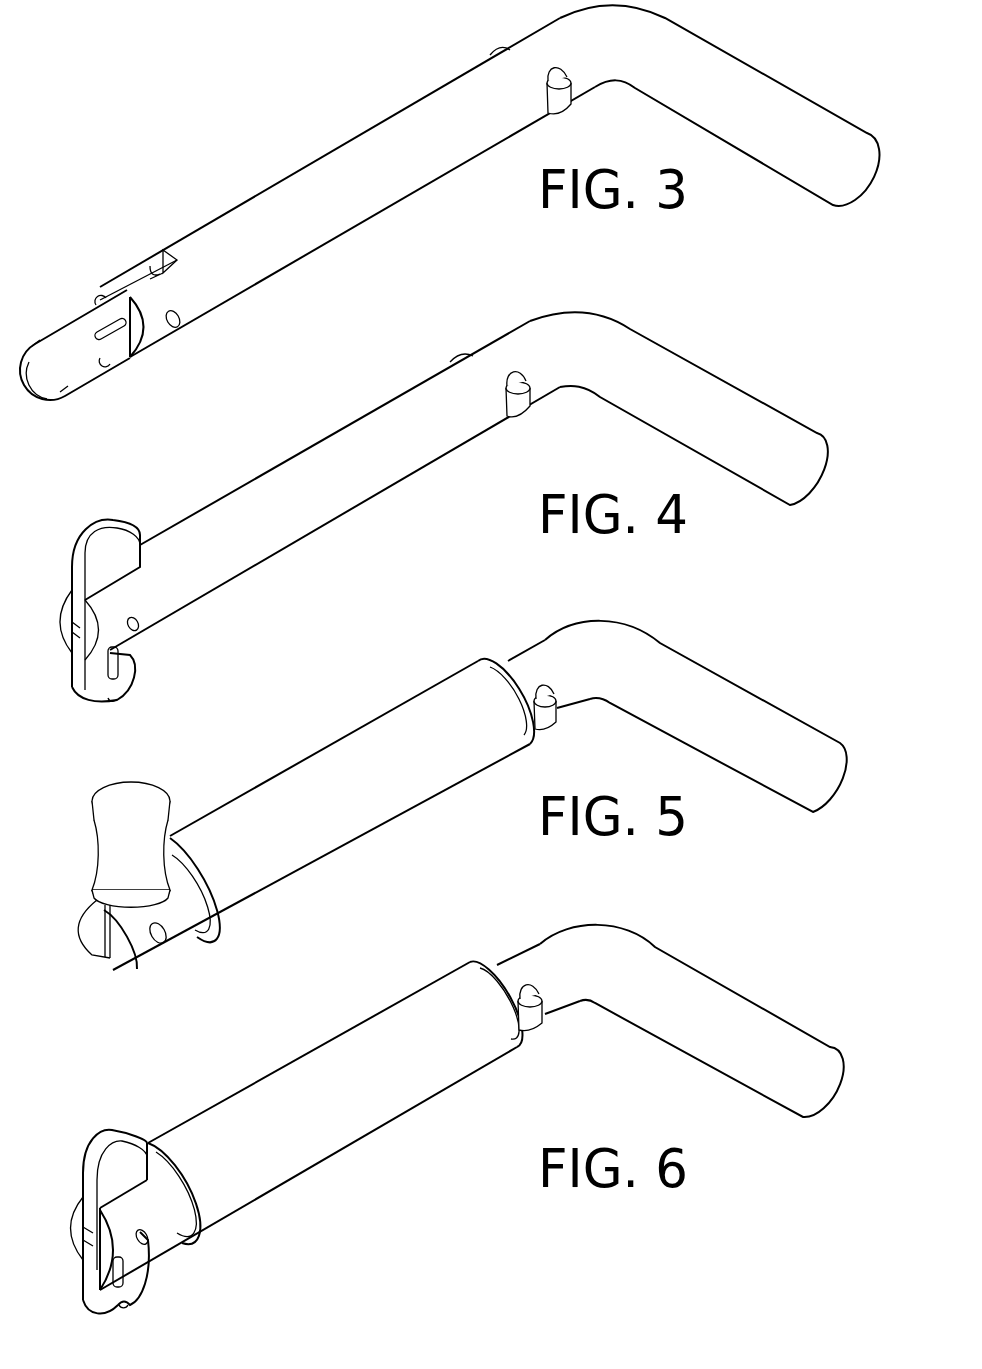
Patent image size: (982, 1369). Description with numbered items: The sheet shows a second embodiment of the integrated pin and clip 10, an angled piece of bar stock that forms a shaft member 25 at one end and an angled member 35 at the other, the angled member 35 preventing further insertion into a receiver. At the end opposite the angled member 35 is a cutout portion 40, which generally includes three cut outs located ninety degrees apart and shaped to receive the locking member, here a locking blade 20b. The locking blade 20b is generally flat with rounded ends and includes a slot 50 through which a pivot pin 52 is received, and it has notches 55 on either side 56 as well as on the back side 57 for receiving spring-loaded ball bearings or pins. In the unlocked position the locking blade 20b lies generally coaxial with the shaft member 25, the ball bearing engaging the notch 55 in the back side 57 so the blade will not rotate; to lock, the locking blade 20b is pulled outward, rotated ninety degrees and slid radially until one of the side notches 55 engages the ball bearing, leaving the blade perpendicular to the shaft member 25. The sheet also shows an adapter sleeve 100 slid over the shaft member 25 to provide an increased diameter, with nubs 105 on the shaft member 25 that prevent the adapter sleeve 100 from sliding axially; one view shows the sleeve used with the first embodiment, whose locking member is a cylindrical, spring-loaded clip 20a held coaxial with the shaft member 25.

In FIG. 3, the integrated pin and clip 10 is at (750, 44).
In FIG. 4, the integrated pin and clip 10 is at (711, 346).
In FIG. 5, the integrated pin and clip 10 is at (740, 655).
In FIG. 6, the integrated pin and clip 10 is at (728, 958).
In FIG. 5, the clip 20a is at (143, 793).
In FIG. 6, the locking blade 20b is at (110, 1214).
In FIG. 3, the shaft member 25 is at (347, 197).
In FIG. 4, the shaft member 25 is at (335, 485).
In FIG. 5, the shaft member 25 is at (347, 818).
In FIG. 6, the shaft member 25 is at (340, 1121).
In FIG. 3, the angled member 35 is at (780, 162).
In FIG. 4, the angled member 35 is at (740, 467).
In FIG. 5, the angled member 35 is at (767, 777).
In FIG. 6, the angled member 35 is at (755, 1080).
In FIG. 3, the cutout portion 40 is at (104, 323).
In FIG. 4, the cutout portion 40 is at (108, 635).
In FIG. 5, the cutout portion 40 is at (94, 929).
In FIG. 3, the slot 50 is at (118, 330).
In FIG. 4, the slot 50 is at (118, 667).
In FIG. 6, the slot 50 is at (118, 1277).
In FIG. 3, the pivot pin 52 is at (182, 323).
In FIG. 4, the pivot pin 52 is at (142, 622).
In FIG. 5, the pivot pin 52 is at (180, 922).
In FIG. 6, the pivot pin 52 is at (148, 1243).
In FIG. 3, the notches 55 is at (103, 288).
In FIG. 4, the notches 55 is at (73, 623).
In FIG. 6, the notches 55 is at (123, 1305).
In FIG. 3, the side 56 is at (68, 310).
In FIG. 4, the side 56 is at (142, 648).
In FIG. 4, the back side 57 is at (95, 705).
In FIG. 5, the adapter sleeve 100 is at (398, 713).
In FIG. 6, the adapter sleeve 100 is at (383, 1022).
In FIG. 3, the nubs 105 is at (566, 98).
In FIG. 4, the nubs 105 is at (524, 404).
In FIG. 5, the nubs 105 is at (560, 715).
In FIG. 6, the nubs 105 is at (545, 1018).